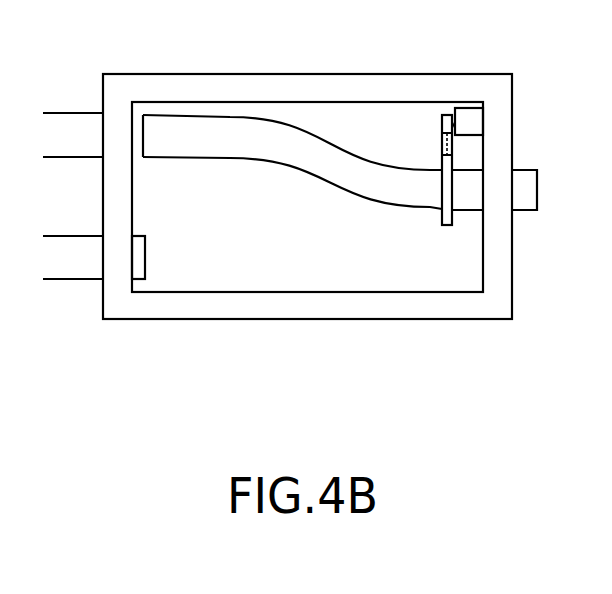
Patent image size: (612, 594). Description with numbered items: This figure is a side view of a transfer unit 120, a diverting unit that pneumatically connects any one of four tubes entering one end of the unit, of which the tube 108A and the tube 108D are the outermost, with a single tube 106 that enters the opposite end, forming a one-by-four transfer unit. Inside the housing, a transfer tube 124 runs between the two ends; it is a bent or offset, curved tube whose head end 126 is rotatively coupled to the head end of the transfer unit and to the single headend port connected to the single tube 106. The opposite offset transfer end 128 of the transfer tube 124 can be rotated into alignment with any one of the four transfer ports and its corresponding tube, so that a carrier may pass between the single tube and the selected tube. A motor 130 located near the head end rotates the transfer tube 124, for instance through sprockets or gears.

The single tube 106 is at (522, 170).
The tube 108A is at (67, 113).
The tube 108D is at (70, 280).
The transfer unit 120 is at (222, 348).
The transfer tube 124 is at (258, 158).
The head end 126 is at (470, 213).
The offset transfer end 128 is at (143, 143).
The motor 130 is at (471, 118).